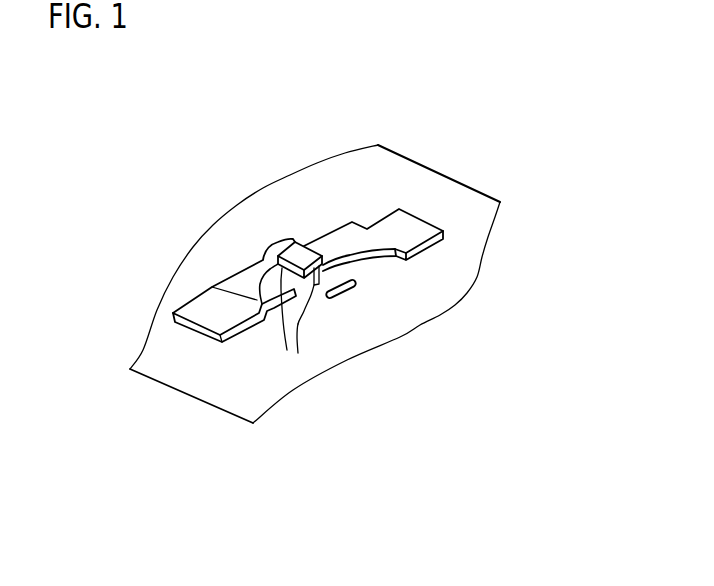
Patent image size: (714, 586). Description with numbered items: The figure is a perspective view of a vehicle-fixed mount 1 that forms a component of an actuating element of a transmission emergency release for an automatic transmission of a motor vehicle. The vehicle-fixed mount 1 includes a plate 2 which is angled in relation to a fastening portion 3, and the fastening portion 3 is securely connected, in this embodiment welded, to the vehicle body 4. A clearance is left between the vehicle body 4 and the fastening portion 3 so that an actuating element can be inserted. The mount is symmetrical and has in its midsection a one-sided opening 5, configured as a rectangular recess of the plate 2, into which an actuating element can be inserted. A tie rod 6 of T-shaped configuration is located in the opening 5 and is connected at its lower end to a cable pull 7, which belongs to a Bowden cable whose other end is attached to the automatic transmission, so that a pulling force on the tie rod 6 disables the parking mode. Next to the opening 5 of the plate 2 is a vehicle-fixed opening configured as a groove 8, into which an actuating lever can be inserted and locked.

The vehicle-fixed mount 1 is at (208, 125).
The plate 2 is at (287, 350).
The fastening portion 3 is at (210, 310).
The vehicle body 4 is at (163, 360).
The one-sided opening 5 is at (342, 261).
The tie rod 6 is at (293, 250).
The cable pull 7 is at (293, 327).
The groove 8 is at (344, 295).